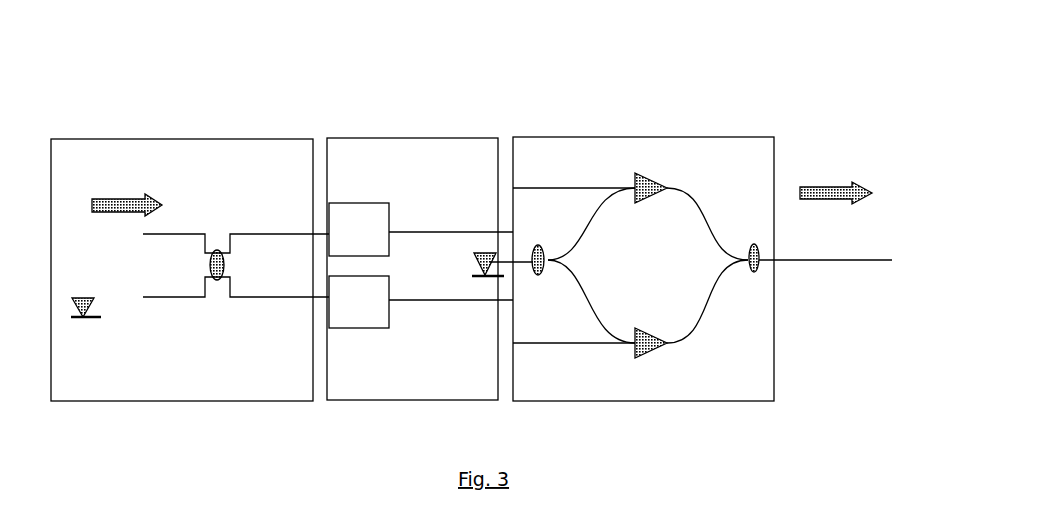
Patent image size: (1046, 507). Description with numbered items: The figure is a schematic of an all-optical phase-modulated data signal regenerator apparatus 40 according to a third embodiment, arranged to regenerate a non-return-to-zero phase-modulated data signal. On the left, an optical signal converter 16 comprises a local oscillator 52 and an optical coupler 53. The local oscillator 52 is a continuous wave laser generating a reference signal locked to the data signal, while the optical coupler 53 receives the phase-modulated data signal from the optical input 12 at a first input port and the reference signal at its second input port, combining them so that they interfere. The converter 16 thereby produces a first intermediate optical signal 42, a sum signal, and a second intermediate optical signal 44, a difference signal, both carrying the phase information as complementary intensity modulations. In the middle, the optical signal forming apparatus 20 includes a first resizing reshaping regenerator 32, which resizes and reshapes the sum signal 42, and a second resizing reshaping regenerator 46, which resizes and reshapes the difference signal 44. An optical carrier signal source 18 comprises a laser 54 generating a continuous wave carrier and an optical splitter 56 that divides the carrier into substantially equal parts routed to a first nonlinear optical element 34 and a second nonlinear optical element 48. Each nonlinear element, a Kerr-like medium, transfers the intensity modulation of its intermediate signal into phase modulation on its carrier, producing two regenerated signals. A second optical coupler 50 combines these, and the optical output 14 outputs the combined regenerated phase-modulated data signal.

The all-optical phase-modulated data signal regenerator apparatus 40 is at (588, 60).
The optical signal converter 16 is at (170, 352).
The optical input 12 is at (170, 242).
The local oscillator 52 is at (85, 320).
The optical coupler 53 is at (218, 284).
The second intermediate optical signal 44 is at (293, 232).
The first intermediate optical signal 42 is at (293, 300).
The optical signal forming apparatus 20 is at (504, 414).
The second resizing reshaping (2R) regenerator 46 is at (373, 205).
The first resizing reshaping (2R) regenerator 32 is at (355, 327).
The laser 54 is at (487, 281).
The optical carrier signal source 18 is at (520, 278).
The optical splitter 56 is at (538, 245).
The second nonlinear optical element 48 is at (652, 185).
The first nonlinear optical element 34 is at (652, 348).
The second optical coupler 50 is at (754, 274).
The optical output 14 is at (823, 262).